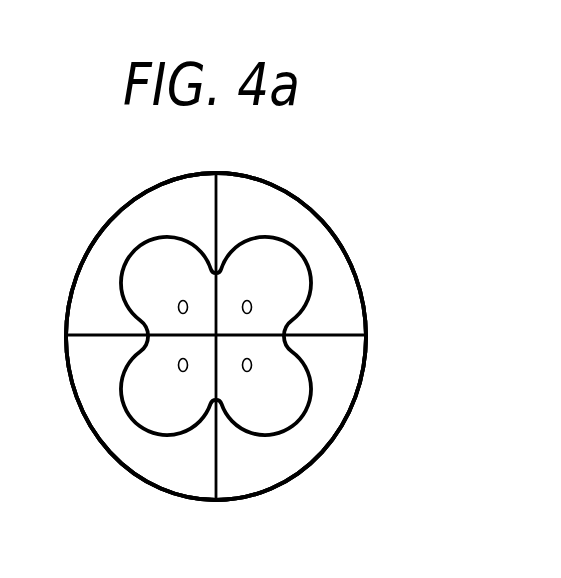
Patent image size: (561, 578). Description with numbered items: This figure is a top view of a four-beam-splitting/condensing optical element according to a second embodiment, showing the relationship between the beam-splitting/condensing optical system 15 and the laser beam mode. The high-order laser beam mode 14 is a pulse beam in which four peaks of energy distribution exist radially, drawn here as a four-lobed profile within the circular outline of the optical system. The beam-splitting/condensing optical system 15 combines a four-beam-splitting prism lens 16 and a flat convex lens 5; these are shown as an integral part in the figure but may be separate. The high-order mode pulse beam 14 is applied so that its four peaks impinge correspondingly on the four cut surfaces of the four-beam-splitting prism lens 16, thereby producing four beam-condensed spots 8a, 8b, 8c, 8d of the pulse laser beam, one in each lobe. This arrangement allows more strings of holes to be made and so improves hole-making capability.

The beam-condensed spot 8a is at (177, 306).
The beam-condensed spot 8b is at (178, 372).
The beam-condensed spot 8c is at (252, 299).
The beam-condensed spot 8d is at (253, 372).
The high-order laser beam mode 14 is at (311, 269).
The beam-splitting/condensing optical system 15 is at (352, 410).
The four-beam-splitting prism lens 16 is at (216, 336).
The flat convex lens 5 is at (216, 336).